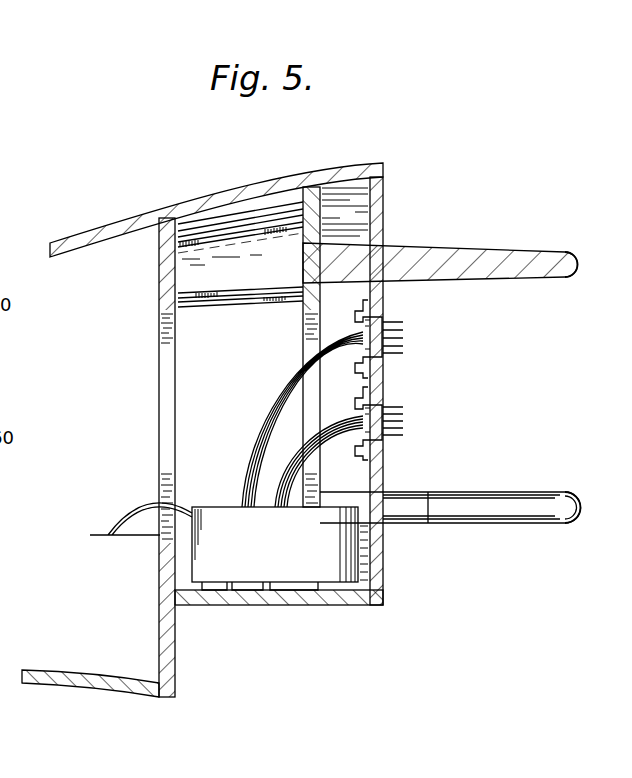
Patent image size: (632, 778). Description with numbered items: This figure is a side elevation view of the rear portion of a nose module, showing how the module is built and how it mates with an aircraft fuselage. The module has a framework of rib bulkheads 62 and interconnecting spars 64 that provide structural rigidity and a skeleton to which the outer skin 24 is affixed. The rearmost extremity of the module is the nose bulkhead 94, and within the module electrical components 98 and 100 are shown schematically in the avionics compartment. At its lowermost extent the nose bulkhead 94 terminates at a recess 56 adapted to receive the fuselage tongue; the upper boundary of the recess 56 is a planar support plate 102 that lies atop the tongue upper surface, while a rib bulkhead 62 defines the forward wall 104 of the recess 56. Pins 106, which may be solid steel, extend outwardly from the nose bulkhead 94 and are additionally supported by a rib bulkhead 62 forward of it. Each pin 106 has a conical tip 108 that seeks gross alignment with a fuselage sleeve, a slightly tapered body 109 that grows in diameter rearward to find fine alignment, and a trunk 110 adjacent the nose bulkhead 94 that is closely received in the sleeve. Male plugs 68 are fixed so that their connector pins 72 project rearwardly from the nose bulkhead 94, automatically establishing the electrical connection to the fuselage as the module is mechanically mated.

The outer skin 24 is at (302, 170).
The nose bulkhead 94 is at (382, 190).
The rib bulkhead 62 is at (178, 273).
The spar 64 is at (251, 230).
The trunk 110 is at (403, 243).
The body 109 is at (466, 243).
The pin 106 is at (500, 253).
The conical tip 108 is at (588, 262).
The connector pin 72 is at (396, 321).
The male plug 68 is at (380, 356).
The electrical component 98 is at (292, 556).
The electrical component 100 is at (102, 607).
The forward wall 104 is at (177, 643).
The support plate 102 is at (325, 607).
The recess 56 is at (205, 678).